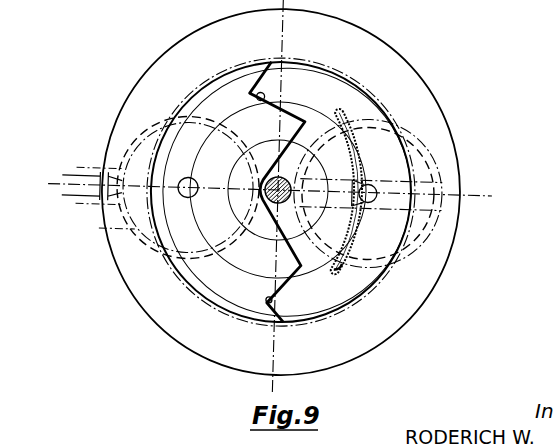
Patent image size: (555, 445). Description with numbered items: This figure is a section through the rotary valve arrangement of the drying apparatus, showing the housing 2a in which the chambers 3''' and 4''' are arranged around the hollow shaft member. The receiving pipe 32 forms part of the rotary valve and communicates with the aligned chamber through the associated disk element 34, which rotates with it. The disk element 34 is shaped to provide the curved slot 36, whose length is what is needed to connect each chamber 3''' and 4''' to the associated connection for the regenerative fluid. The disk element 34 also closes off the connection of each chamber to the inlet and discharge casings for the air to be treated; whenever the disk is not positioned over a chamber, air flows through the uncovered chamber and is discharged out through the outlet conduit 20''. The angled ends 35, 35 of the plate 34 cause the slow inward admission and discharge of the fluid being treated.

The housing 2a is at (388, 60).
The angled ends 35 is at (252, 96).
The disk element 34 is at (370, 108).
The receiving pipe 32 is at (348, 205).
The curved slot 36 is at (336, 268).
The outlet conduit 20'' is at (71, 164).
The chamber 3''' is at (80, 227).
The chamber 4''' is at (410, 193).